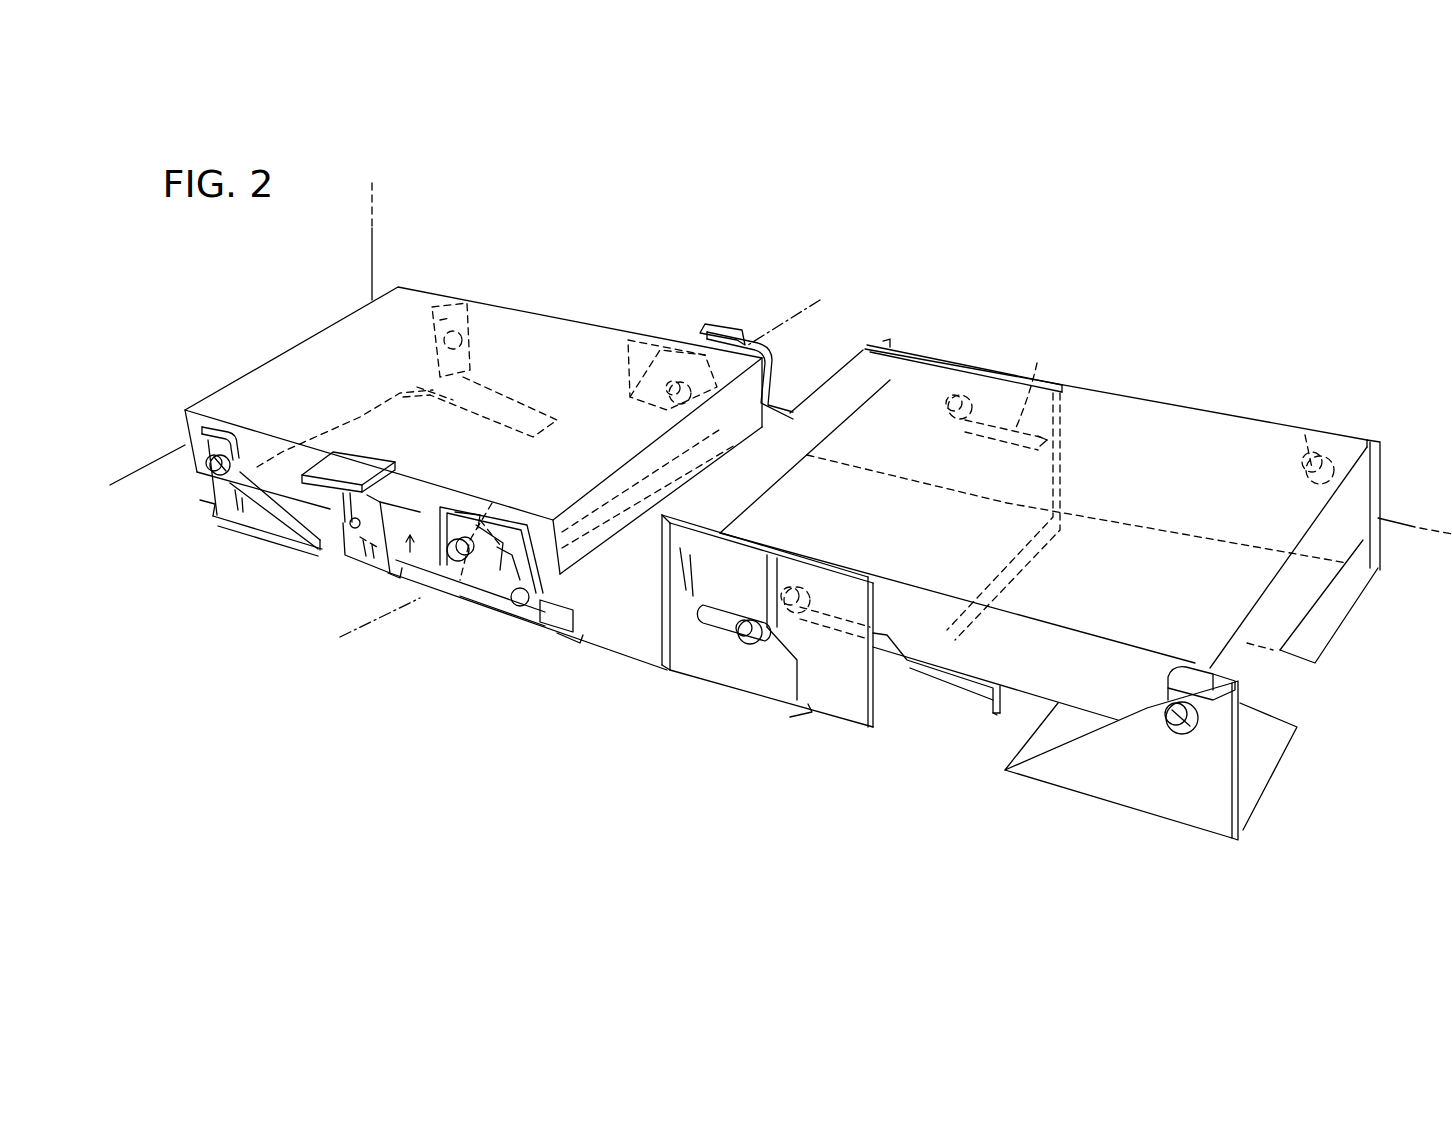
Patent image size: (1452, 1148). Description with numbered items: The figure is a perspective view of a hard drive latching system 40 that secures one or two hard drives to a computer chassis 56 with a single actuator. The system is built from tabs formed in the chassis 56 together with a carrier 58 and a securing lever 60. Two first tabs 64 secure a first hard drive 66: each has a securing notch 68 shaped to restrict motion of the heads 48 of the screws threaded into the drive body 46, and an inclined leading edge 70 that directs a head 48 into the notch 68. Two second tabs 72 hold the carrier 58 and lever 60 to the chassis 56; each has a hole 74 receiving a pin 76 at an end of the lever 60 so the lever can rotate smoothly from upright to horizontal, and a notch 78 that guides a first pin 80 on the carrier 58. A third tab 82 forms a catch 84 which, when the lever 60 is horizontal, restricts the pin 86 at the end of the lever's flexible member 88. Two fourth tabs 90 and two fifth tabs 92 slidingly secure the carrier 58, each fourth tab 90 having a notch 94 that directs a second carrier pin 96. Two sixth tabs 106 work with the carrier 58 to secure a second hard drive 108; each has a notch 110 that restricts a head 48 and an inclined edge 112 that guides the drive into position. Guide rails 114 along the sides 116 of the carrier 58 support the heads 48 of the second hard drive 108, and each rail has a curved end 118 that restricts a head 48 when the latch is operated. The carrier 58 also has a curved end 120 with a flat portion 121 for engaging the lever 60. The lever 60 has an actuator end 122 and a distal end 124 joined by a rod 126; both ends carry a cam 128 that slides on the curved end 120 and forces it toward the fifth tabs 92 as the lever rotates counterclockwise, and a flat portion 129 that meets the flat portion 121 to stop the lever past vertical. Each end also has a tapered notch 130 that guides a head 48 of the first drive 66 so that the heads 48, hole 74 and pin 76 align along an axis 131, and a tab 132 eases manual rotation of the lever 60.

The hard drive latching system 40 is at (1140, 322).
The body 46 is at (492, 503).
The head 48 is at (205, 470).
The chassis 56 is at (420, 706).
The carrier 58 is at (851, 702).
The securing lever 60 is at (397, 588).
The first tab 64 is at (447, 296).
The first hard drive 66 is at (573, 340).
The securing notch 68 is at (252, 455).
The inclined leading edge 70 is at (525, 378).
The second tab 72 is at (777, 377).
The hole 74 is at (453, 517).
The pin 76 is at (458, 557).
The notch 78 is at (497, 547).
The first pin 80 is at (525, 606).
The third tab 82 is at (343, 548).
The catch 84 is at (372, 470).
The pin 86 is at (407, 483).
The flexible member 88 is at (318, 447).
The fourth tab 90 is at (927, 350).
The fifth tab 92 is at (953, 697).
The notch 94 is at (707, 645).
The second carrier pin 96 is at (753, 645).
The sixth tab 106 is at (1170, 800).
The second hard drive 108 is at (1112, 423).
The notch 110 is at (1320, 438).
The inclined edge 112 is at (1057, 740).
The guide rail 114 is at (877, 606).
The side 116 is at (832, 405).
The curved end 118 is at (940, 400).
The curved end 120 is at (760, 440).
The flat portion 121 is at (790, 400).
The actuator end 122 is at (420, 547).
The distal end 124 is at (642, 373).
The rod 126 is at (625, 505).
The cam 128 is at (753, 343).
The flat portion 129 is at (740, 340).
The tapered notch 130 is at (668, 347).
The axis 131 is at (365, 622).
The tab 132 is at (341, 457).